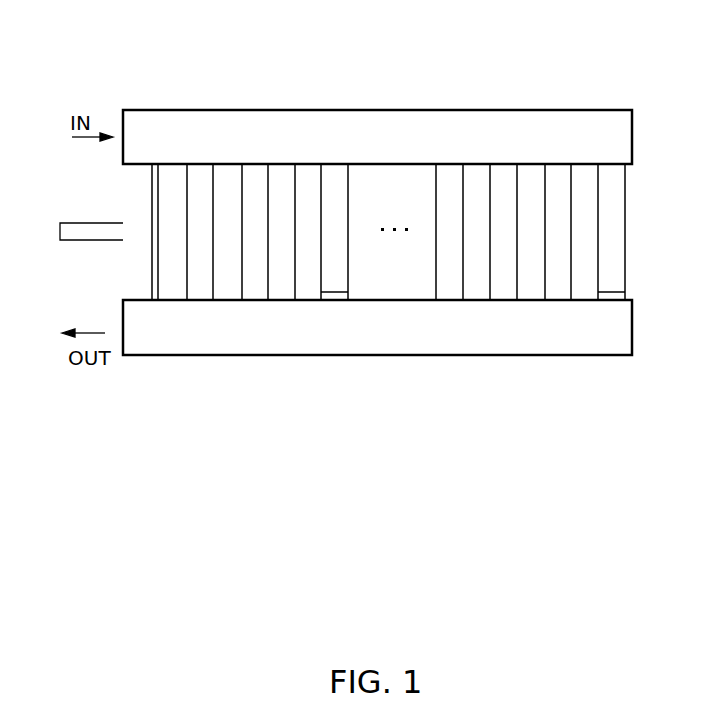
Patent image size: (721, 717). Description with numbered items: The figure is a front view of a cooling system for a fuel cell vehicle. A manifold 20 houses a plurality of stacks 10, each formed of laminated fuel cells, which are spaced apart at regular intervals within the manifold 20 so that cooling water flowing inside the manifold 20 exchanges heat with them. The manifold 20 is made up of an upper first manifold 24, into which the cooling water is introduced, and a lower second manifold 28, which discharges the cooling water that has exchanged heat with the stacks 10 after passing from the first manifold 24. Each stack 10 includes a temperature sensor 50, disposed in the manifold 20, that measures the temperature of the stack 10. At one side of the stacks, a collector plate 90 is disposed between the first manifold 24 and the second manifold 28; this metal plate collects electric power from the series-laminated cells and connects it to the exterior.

The manifold 20 is at (602, 87).
The first manifold 24 is at (632, 133).
The second manifold 28 is at (632, 323).
The collector plate 90 is at (87, 228).
The stack 10 is at (337, 280).
The temperature sensor 50 is at (343, 300).